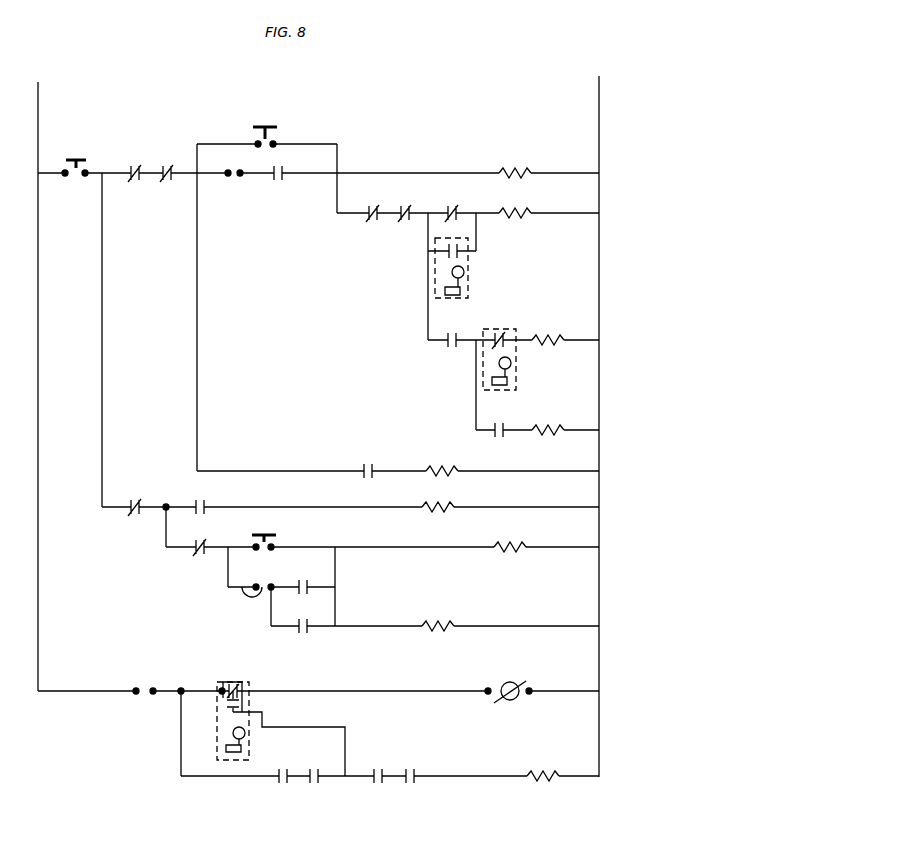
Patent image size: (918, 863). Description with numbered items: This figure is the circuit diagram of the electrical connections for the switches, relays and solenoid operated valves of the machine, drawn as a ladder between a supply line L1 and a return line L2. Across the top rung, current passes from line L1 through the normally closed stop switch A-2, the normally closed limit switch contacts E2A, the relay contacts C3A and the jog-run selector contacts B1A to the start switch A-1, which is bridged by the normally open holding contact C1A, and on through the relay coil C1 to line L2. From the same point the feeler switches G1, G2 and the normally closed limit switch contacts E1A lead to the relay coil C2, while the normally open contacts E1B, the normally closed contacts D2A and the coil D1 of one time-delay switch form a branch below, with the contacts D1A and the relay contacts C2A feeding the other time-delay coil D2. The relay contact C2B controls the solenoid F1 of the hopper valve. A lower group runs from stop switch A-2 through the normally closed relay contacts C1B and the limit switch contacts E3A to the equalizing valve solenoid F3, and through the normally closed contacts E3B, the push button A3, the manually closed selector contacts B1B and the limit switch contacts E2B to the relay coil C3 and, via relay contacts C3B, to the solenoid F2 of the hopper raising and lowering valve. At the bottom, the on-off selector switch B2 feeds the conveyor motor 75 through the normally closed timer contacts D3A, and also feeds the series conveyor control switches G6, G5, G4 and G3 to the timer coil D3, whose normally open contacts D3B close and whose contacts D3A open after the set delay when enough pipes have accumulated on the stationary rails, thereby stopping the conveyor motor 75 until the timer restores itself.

The line L1 is at (30, 376).
The line L2 is at (596, 418).
The start switch A-1 is at (263, 128).
The stop switch A-2 is at (75, 160).
The pushbutton A3 is at (262, 552).
The jog-run selector switch contacts B1A is at (228, 164).
The jog-run selector switch contacts B1B is at (256, 581).
The on-off selector switch B2 is at (142, 673).
The relay coil C1 is at (515, 163).
The relay coil C2 is at (515, 204).
The relay coil C3 is at (510, 538).
The holding contact C1A is at (276, 184).
The relay contacts C1B is at (135, 499).
The relay contacts C2A is at (499, 422).
The relay contact C2B is at (363, 462).
The relay contacts C3A is at (166, 165).
The relay contacts C3B is at (298, 618).
The time-delay switch coil D1 is at (548, 330).
The time-delay switch coil D2 is at (548, 421).
The timer coil D3 is at (543, 766).
The normally-open contacts D1A is at (451, 260).
The normally-closed contacts D2A is at (499, 348).
The normally-closed timer contacts D3A is at (228, 706).
The normally-open timer contacts D3B is at (233, 721).
The normally closed contacts E1A is at (454, 206).
The normally open contacts E1B is at (450, 332).
The normally closed contacts E2A is at (132, 165).
The normally open contacts E2B is at (297, 579).
The normally open contacts E3A is at (198, 498).
The normally closed contacts E3B is at (191, 561).
The solenoid F1 is at (442, 461).
The solenoid F2 is at (438, 617).
The solenoid F3 is at (438, 497).
The feeler switch G1 is at (372, 205).
The feeler switch G2 is at (404, 206).
The conveyor control switch G3 is at (409, 767).
The conveyor control switch G4 is at (376, 767).
The conveyor control switch G5 is at (314, 767).
The conveyor control switch G6 is at (282, 767).
The conveyor motor 75 is at (515, 683).